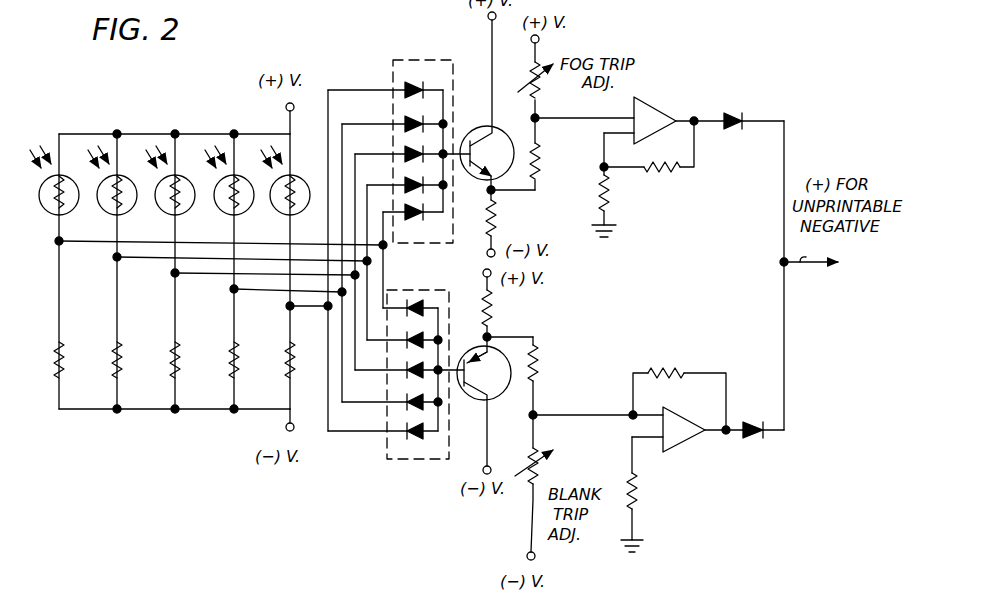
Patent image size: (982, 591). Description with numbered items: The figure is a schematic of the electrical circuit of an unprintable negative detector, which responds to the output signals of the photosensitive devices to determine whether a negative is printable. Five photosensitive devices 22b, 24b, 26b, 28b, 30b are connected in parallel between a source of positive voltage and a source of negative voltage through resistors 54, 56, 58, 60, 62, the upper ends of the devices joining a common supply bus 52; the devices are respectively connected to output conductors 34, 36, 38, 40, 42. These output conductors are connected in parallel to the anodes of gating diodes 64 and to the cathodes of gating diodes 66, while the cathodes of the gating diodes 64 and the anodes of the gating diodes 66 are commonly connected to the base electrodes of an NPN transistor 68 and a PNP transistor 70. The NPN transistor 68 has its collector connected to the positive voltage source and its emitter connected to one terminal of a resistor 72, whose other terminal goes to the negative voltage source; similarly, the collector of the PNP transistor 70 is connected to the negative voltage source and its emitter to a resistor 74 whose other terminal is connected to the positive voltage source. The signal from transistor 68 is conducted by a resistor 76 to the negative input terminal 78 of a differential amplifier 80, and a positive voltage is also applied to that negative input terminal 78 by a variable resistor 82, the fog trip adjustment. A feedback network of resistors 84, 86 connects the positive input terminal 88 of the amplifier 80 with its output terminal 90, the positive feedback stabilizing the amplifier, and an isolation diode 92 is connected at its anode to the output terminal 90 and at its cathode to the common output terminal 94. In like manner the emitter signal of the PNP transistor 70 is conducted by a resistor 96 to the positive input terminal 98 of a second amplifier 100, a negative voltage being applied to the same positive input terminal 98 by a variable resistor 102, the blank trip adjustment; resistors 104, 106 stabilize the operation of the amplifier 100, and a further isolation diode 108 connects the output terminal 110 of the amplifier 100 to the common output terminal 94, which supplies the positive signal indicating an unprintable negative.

The photosensitive device 22b is at (66, 215).
The photosensitive device 24b is at (124, 215).
The photosensitive device 26b is at (182, 215).
The photosensitive device 28b is at (242, 215).
The photosensitive device 30b is at (304, 212).
The output conductor 34 is at (60, 245).
The output conductor 36 is at (118, 261).
The output conductor 38 is at (176, 277).
The output conductor 40 is at (236, 293).
The output conductor 42 is at (292, 310).
The positive supply bus 52 is at (212, 134).
The resistor 54 is at (50, 376).
The resistor 56 is at (108, 376).
The resistor 58 is at (166, 376).
The resistor 60 is at (225, 376).
The resistor 62 is at (281, 376).
The gating diodes 64 is at (433, 60).
The gating diodes 66 is at (405, 460).
The NPN transistor 68 is at (502, 133).
The PNP transistor 70 is at (497, 397).
The resistor 72 is at (496, 222).
The resistor 74 is at (492, 300).
The resistor 76 is at (540, 162).
The negative input terminal 78 is at (538, 118).
The differential amplifier 80 is at (663, 107).
The variable resistor 82 is at (530, 74).
The resistor 84 is at (669, 171).
The resistor 86 is at (600, 198).
The positive input terminal 88 is at (602, 165).
The output terminal 90 is at (696, 119).
The isolation diode 92 is at (734, 130).
The common output terminal 94 is at (786, 272).
The resistor 96 is at (538, 362).
The positive input terminal 98 is at (537, 415).
The second amplifier 100 is at (674, 448).
The variable resistor 102 is at (545, 462).
The resistor 104 is at (667, 372).
The resistor 106 is at (637, 497).
The isolation diode 108 is at (755, 439).
The output terminal 110 is at (729, 426).